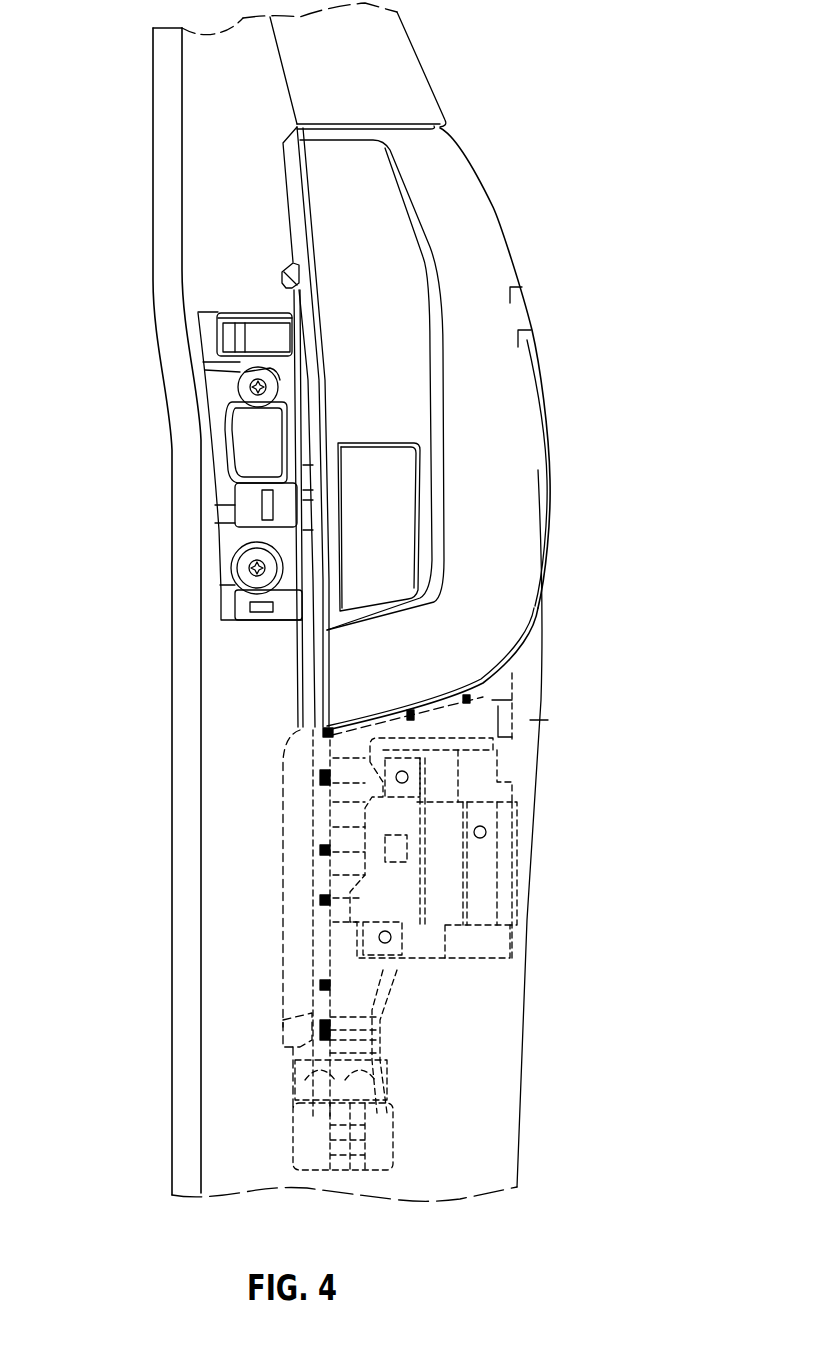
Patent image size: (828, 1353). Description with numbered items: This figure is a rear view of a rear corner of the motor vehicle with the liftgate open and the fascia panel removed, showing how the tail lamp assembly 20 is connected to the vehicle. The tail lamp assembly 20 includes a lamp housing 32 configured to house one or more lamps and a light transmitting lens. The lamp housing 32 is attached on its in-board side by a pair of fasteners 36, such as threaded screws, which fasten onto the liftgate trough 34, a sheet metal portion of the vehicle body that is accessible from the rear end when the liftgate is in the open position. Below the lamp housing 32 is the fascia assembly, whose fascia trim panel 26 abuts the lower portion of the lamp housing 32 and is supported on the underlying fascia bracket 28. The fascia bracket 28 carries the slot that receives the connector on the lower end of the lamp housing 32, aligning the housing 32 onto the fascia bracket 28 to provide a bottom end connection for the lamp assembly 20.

The vehicle lamp assembly 20 is at (565, 322).
The fascia trim panel 26 is at (530, 720).
The fascia bracket 28 is at (515, 828).
The lamp housing 32 is at (448, 199).
The liftgate trough 34 is at (222, 230).
The fasteners 36 is at (240, 383).